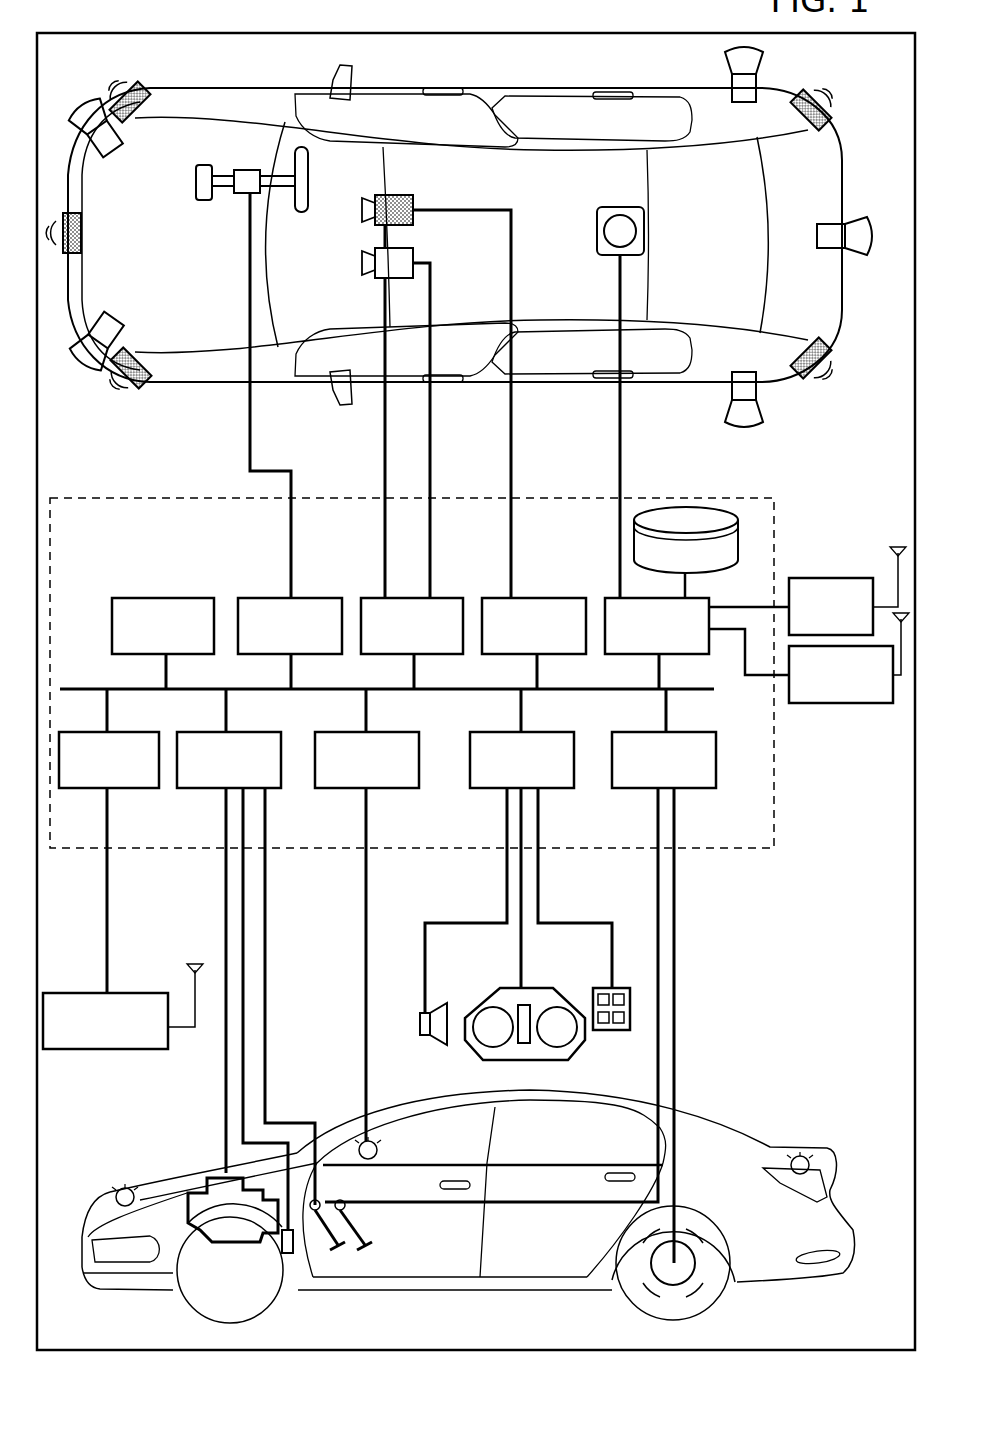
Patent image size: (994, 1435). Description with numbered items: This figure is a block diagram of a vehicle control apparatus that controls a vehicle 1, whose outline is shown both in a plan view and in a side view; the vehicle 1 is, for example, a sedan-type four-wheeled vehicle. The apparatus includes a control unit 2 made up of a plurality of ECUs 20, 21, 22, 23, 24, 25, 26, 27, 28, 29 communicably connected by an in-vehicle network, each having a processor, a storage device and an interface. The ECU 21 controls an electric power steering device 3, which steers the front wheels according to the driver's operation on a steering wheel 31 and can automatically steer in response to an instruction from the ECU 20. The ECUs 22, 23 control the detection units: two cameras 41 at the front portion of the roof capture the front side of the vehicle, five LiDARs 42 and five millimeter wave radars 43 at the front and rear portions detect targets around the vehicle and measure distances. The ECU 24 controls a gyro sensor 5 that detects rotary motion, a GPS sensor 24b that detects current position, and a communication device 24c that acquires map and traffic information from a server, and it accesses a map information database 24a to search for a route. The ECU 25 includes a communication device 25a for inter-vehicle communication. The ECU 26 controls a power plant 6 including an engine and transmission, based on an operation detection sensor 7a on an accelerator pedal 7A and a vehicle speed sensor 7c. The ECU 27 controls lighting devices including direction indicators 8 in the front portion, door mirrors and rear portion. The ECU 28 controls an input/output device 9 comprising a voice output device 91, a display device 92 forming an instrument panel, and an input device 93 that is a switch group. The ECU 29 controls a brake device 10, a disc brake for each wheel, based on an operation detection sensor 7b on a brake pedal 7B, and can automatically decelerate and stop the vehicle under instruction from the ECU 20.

The vehicle 1 is at (850, 147).
The control unit 2 is at (768, 852).
The electric power steering device 3 is at (204, 200).
The steering wheel 31 is at (301, 212).
The camera 41 is at (415, 216).
The LiDAR 42 is at (113, 158).
The millimeter wave radar 43 is at (137, 118).
The gyro sensor 5 is at (644, 231).
The power plant 6 is at (194, 1173).
The operation detection sensor 7a is at (316, 1197).
The operation detection sensor 7b is at (345, 1204).
The accelerator pedal 7A is at (346, 1248).
The brake pedal 7B is at (372, 1240).
The vehicle speed sensor 7c is at (288, 1254).
The direction indicator 8 is at (116, 1195).
The input/output device 9 is at (514, 1036).
The voice output device 91 is at (418, 1020).
The display device 92 is at (482, 1003).
The input device 93 is at (608, 1030).
The brake device 10 is at (675, 1285).
The ECU 20 is at (168, 598).
The ECU 21 is at (313, 598).
The ECU 22 is at (413, 598).
The ECU 23 is at (541, 598).
The ECU 24 is at (608, 598).
The map information database 24a is at (686, 507).
The GPS sensor 24b is at (846, 578).
The communication device 24c is at (840, 703).
The ECU 25 is at (136, 790).
The communication device 25a is at (102, 1050).
The ECU 26 is at (208, 790).
The ECU 27 is at (394, 790).
The ECU 28 is at (562, 790).
The ECU 29 is at (698, 790).